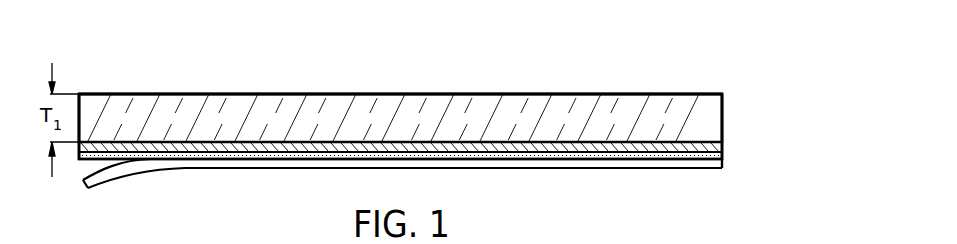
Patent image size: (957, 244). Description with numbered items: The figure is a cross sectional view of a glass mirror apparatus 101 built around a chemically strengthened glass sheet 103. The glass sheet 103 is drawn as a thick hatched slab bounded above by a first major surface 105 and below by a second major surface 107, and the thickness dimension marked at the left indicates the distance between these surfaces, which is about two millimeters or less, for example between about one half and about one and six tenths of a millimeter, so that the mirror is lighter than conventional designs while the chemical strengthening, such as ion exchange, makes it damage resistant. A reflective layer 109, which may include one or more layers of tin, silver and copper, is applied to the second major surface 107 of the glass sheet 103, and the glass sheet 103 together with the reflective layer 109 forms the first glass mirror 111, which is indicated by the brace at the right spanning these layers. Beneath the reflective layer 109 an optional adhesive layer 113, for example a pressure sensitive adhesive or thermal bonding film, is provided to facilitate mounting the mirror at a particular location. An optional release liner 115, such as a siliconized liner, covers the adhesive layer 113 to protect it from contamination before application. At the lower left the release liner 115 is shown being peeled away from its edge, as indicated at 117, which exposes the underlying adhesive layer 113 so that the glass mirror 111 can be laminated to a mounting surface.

The glass mirror apparatus 101 is at (764, 86).
The chemically strengthened glass sheet 103 is at (551, 86).
The first major surface 105 is at (644, 84).
The second major surface 107 is at (564, 156).
The reflective layer 109 is at (513, 147).
The first glass mirror 111 is at (729, 94).
The adhesive layer 113 is at (79, 158).
The release liner 115 is at (723, 164).
The peeled edge of release liner 117 is at (77, 198).